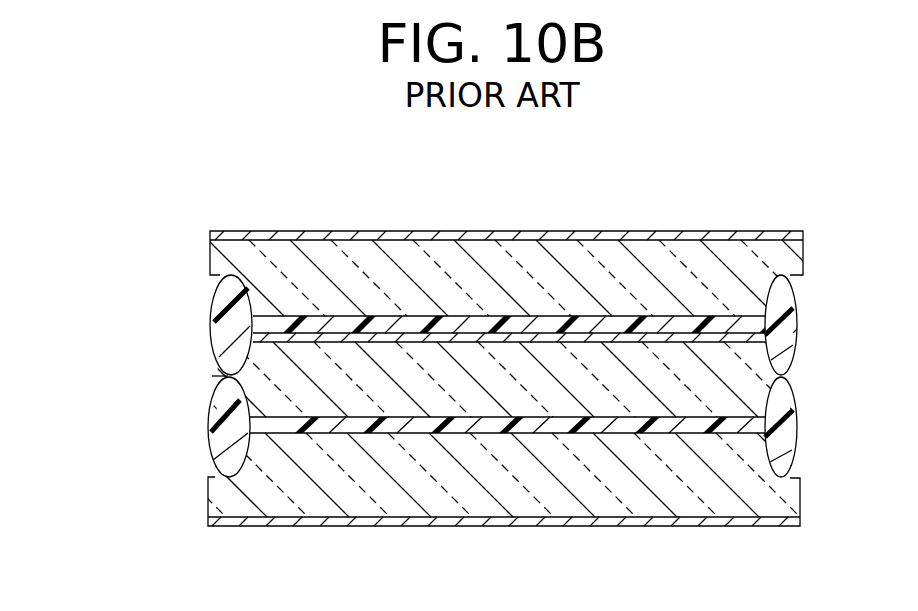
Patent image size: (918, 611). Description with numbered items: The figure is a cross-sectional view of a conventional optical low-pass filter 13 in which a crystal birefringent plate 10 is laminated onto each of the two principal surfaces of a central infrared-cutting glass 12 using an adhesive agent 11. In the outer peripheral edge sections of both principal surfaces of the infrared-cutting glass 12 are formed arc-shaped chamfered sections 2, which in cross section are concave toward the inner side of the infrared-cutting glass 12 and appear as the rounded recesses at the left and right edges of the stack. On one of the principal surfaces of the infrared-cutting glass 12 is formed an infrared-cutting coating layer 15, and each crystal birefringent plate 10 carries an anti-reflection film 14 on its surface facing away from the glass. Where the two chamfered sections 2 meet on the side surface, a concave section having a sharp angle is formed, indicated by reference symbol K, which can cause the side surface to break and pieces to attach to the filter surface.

The arc-shaped chamfered section 2 is at (795, 285).
The crystal birefringent plate 10 is at (562, 285).
The adhesive agent 11 is at (217, 307).
The infrared-cutting glass 12 is at (482, 400).
The optical low-pass filter 13 is at (158, 385).
The anti-reflection film 14 is at (326, 237).
The infrared-cutting coating layer 15 is at (398, 343).
The concave section having a sharp angle K is at (217, 375).